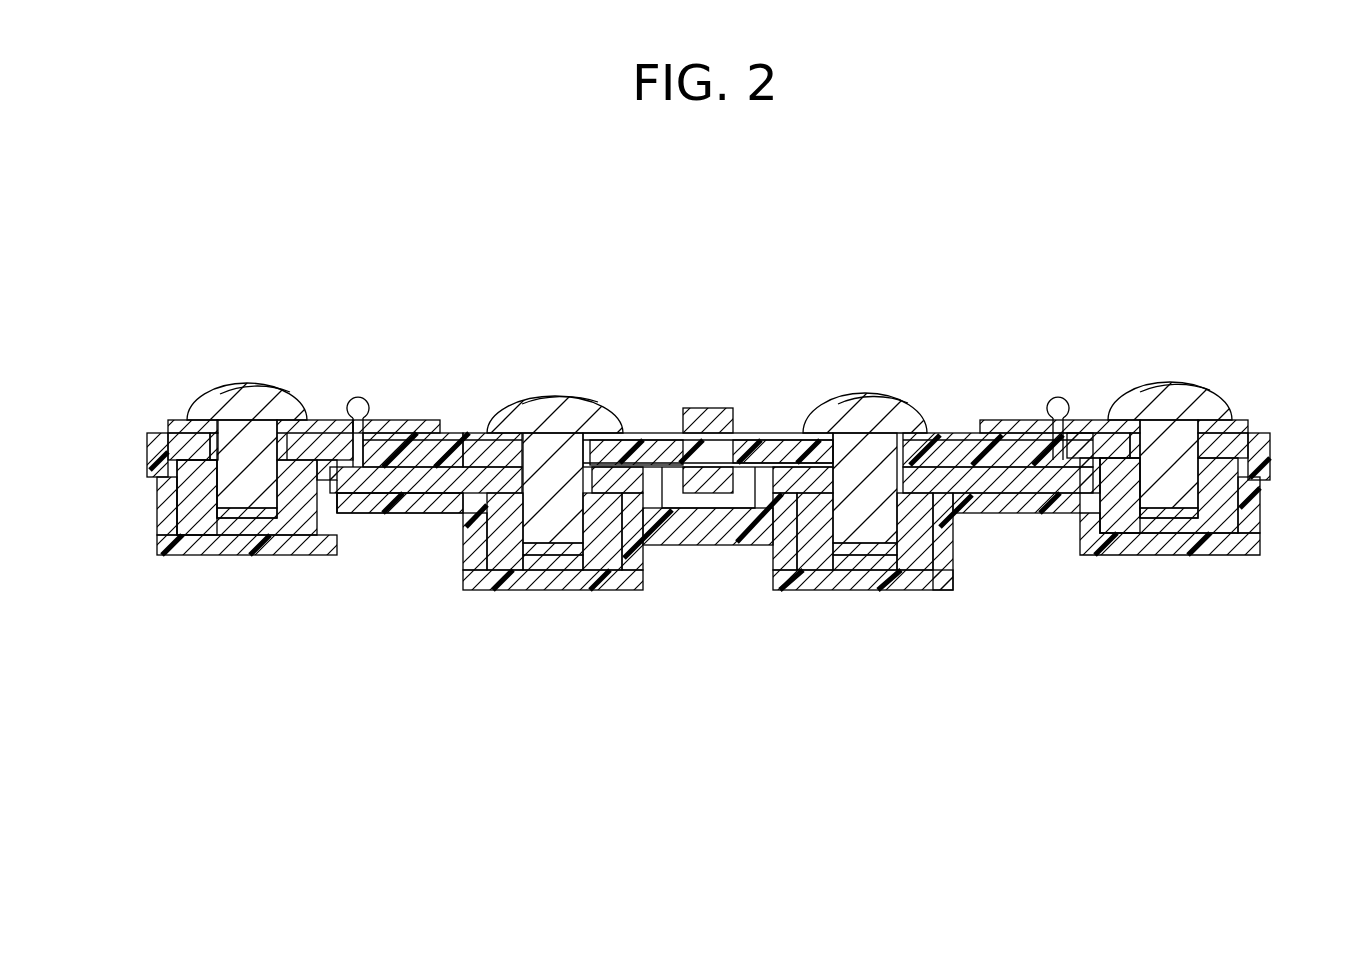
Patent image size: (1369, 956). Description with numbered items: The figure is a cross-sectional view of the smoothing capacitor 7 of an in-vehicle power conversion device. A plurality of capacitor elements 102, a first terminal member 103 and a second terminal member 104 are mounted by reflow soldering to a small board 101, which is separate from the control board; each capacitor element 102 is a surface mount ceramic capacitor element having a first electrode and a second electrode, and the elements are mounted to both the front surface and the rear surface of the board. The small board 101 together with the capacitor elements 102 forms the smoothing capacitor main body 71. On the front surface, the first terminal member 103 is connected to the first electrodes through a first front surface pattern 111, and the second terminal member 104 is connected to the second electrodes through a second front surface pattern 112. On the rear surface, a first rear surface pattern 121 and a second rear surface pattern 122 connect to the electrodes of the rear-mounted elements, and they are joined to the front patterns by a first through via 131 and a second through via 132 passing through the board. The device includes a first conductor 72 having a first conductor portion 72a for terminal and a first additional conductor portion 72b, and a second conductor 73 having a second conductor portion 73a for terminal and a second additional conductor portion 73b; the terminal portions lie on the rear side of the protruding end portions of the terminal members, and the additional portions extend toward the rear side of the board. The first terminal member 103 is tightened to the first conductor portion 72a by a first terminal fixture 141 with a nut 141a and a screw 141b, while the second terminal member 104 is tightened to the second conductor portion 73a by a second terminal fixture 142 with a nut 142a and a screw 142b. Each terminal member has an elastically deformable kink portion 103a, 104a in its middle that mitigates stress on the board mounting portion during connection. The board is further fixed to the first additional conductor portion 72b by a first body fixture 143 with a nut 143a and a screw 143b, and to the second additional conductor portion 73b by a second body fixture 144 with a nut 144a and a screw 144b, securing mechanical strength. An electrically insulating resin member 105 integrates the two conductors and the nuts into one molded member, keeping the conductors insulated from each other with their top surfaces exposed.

The smoothing capacitor 7 is at (1000, 410).
The smoothing capacitor main body 71 is at (737, 430).
The first conductor 72 is at (170, 442).
The first conductor portion for terminal 72a is at (300, 522).
The first additional conductor portion 72b is at (492, 555).
The second conductor 73 is at (1268, 455).
The second conductor portion for terminal 73a is at (1120, 535).
The second additional conductor portion 73b is at (903, 540).
The small board 101 is at (385, 515).
The capacitor element 102 is at (708, 407).
The first terminal member 103 is at (170, 436).
The kink portion 103a is at (356, 404).
The second terminal member 104 is at (1250, 430).
The kink portion 104a is at (1057, 404).
The resin member 105 is at (1260, 545).
The first front surface pattern 111 is at (462, 433).
The second front surface pattern 112 is at (790, 436).
The first rear surface pattern 121 is at (450, 513).
The second rear surface pattern 122 is at (752, 515).
The first through via 131 is at (482, 440).
The second through via 132 is at (948, 440).
The first terminal fixture 141 is at (222, 417).
The nut 141a is at (197, 530).
The screw 141b is at (252, 396).
The second terminal fixture 142 is at (1170, 398).
The nut 142a is at (1215, 535).
The screw 142b is at (1143, 402).
The first body fixture 143 is at (527, 412).
The nut 143a is at (578, 560).
The screw 143b is at (562, 400).
The second body fixture 144 is at (845, 408).
The nut 144a is at (915, 560).
The screw 144b is at (878, 400).